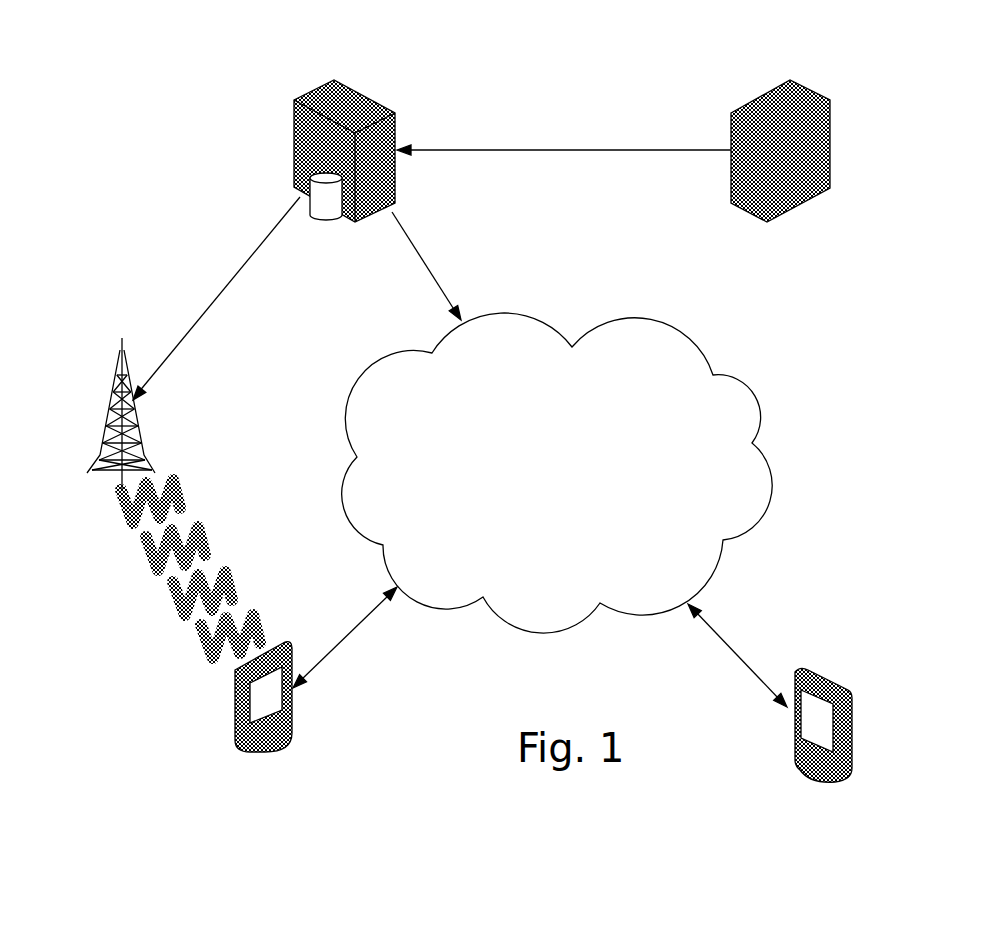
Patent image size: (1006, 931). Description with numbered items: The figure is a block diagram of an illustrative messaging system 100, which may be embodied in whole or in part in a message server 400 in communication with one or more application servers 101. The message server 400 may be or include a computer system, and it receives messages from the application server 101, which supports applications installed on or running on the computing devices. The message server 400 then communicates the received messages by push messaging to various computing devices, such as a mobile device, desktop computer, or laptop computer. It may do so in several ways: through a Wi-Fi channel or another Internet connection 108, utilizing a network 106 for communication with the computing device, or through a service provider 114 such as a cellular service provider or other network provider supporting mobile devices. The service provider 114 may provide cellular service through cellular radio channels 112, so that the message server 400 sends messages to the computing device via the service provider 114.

The messaging system 100 is at (378, 96).
The message server 400 is at (307, 93).
The application server 101 is at (833, 128).
The network 106 is at (572, 456).
The Internet connection 108 is at (730, 647).
The cellular radio channels 112 is at (170, 581).
The service provider 114 is at (110, 407).